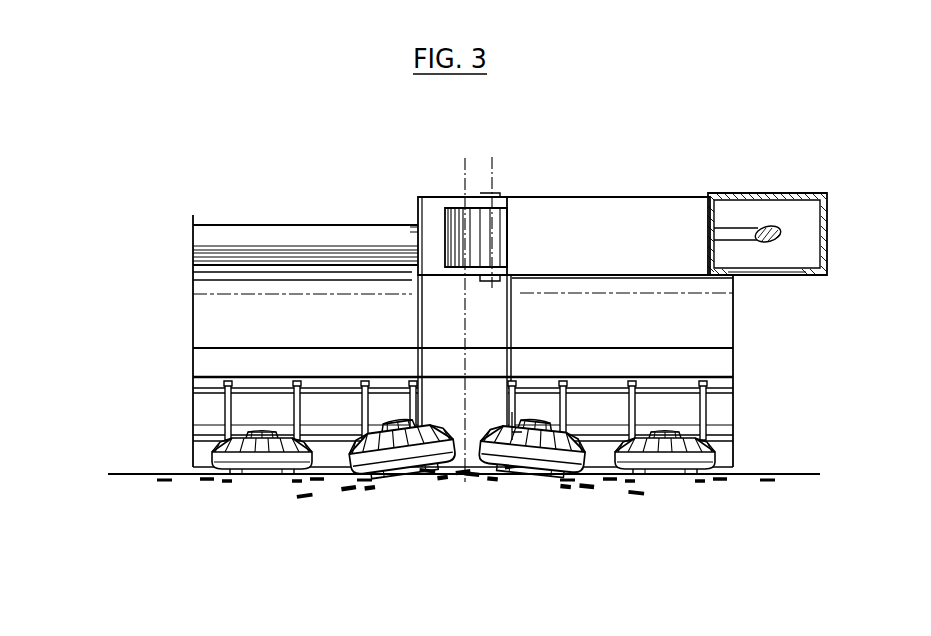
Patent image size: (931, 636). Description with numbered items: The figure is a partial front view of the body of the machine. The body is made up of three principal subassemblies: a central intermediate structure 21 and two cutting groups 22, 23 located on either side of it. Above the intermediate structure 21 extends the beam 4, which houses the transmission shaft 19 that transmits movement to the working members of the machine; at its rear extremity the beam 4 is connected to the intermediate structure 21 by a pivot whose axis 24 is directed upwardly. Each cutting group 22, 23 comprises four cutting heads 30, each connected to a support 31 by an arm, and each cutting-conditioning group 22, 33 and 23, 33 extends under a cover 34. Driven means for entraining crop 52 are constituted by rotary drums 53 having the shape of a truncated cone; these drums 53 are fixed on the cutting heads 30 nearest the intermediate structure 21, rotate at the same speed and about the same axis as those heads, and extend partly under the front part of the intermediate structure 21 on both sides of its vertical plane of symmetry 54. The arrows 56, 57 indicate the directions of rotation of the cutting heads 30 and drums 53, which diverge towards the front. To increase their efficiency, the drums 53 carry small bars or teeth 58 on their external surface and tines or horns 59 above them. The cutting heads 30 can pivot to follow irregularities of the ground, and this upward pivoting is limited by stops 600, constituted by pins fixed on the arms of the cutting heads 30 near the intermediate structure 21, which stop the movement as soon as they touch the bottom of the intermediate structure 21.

The beam 4 is at (657, 213).
The transmission shaft 19 is at (770, 241).
The intermediate structure 21 is at (433, 210).
The cutting group 22 is at (243, 222).
The cutting group 23 is at (728, 362).
The axis 24 is at (493, 172).
The cutting heads 30 is at (232, 478).
The support 31 is at (203, 407).
The conditioning group 33 is at (519, 301).
The cover 34 is at (289, 334).
The driven means for entraining crop 52 is at (437, 414).
The rotary drums 53 is at (412, 450).
The vertical plane of symmetry 54 is at (463, 174).
The arrow 56 is at (420, 499).
The arrow 57 is at (512, 500).
The small bars or teeth 58 is at (355, 452).
The tines or horns 59 is at (417, 428).
The stops 600 is at (457, 428).